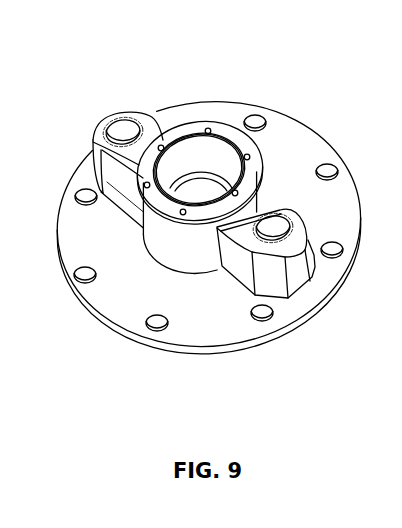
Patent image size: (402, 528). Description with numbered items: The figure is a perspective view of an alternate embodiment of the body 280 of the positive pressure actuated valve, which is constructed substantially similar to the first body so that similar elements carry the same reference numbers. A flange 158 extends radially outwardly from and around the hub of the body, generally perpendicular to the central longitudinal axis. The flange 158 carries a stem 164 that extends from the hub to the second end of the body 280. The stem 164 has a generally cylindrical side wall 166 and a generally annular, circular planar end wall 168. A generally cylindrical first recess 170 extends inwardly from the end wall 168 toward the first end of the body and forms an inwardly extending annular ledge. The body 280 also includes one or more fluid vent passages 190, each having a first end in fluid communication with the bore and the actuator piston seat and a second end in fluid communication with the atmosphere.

The body 280 is at (118, 38).
The flange 158 is at (306, 146).
The stem 164 is at (183, 257).
The side wall 166 is at (157, 233).
The end wall 168 is at (250, 170).
The first recess 170 is at (190, 153).
The fluid vent passage 190 is at (123, 130).